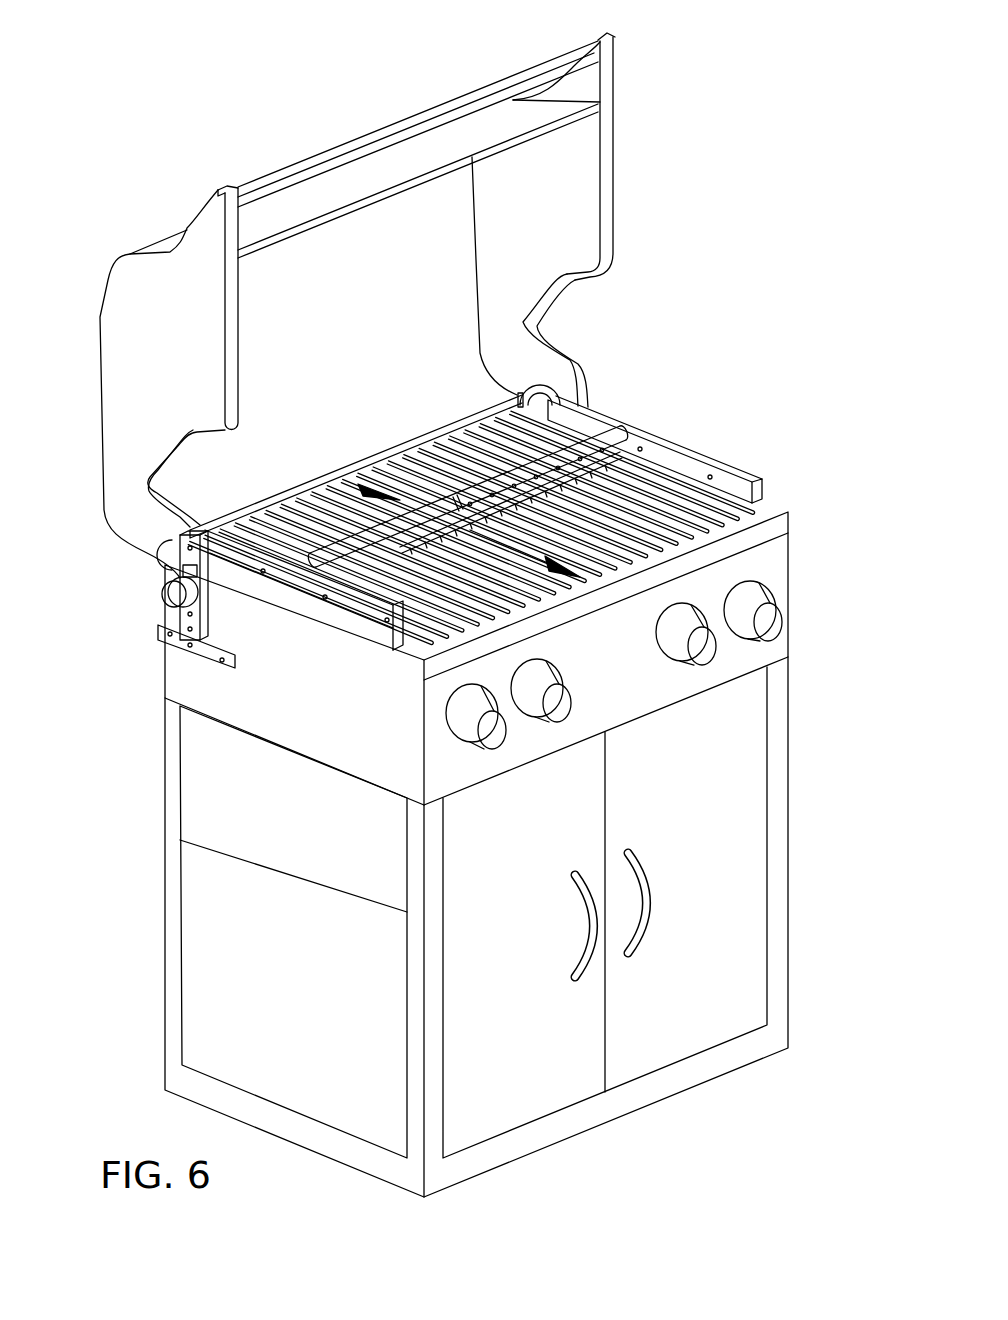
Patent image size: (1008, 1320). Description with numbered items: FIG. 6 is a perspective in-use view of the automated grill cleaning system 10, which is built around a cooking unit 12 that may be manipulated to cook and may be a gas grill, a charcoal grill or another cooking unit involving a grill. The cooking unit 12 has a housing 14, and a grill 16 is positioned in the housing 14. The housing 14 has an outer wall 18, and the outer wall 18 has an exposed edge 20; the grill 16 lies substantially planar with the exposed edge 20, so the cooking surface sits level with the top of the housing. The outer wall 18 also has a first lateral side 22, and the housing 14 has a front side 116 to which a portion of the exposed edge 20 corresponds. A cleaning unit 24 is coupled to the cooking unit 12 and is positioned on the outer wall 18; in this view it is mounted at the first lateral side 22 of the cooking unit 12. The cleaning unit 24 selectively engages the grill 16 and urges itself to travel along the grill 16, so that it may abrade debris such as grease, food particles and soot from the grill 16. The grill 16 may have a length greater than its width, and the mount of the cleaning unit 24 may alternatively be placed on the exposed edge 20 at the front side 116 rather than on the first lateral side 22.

The automated grill cleaning system 10 is at (193, 162).
The cooking unit 12 is at (627, 246).
The housing 14 is at (788, 568).
The grill 16 is at (623, 480).
The outer wall 18 is at (195, 772).
The exposed edge 20 is at (715, 468).
The first lateral side 22 is at (240, 687).
The cleaning unit 24 is at (337, 530).
The front side 116 is at (755, 653).